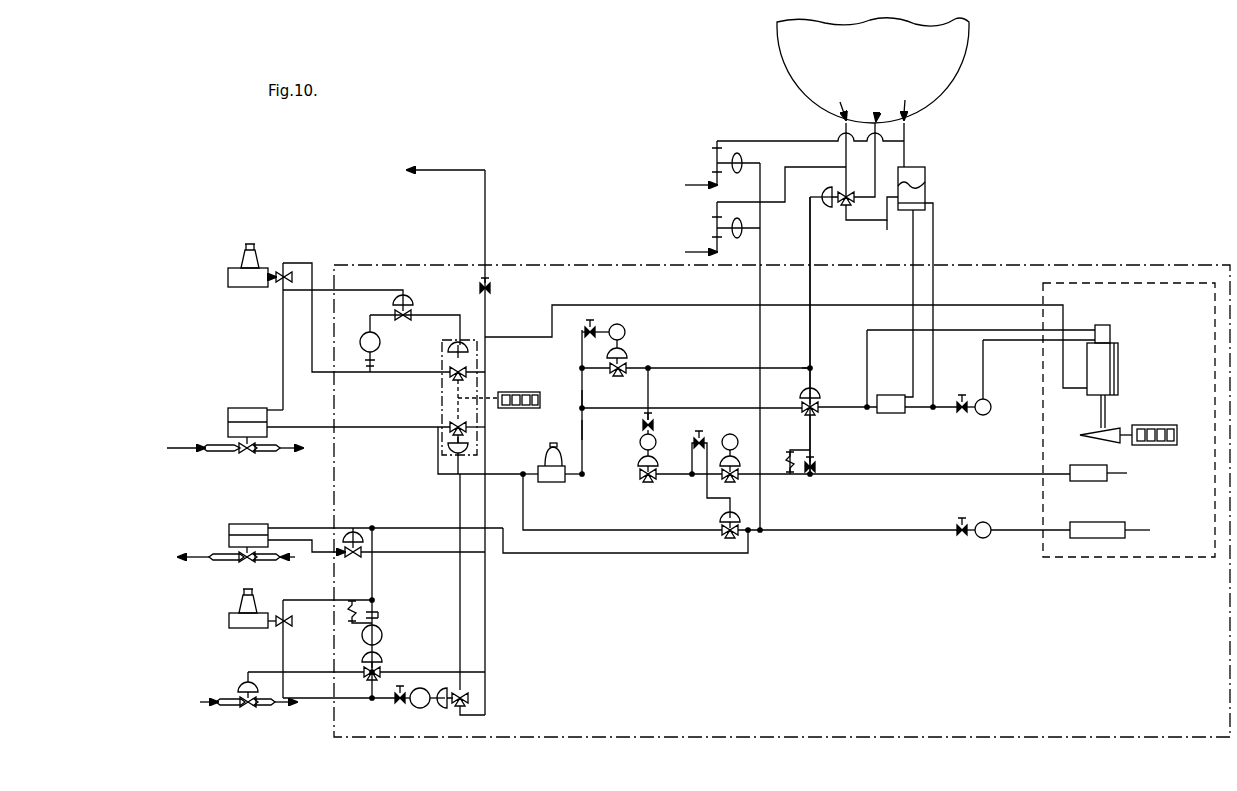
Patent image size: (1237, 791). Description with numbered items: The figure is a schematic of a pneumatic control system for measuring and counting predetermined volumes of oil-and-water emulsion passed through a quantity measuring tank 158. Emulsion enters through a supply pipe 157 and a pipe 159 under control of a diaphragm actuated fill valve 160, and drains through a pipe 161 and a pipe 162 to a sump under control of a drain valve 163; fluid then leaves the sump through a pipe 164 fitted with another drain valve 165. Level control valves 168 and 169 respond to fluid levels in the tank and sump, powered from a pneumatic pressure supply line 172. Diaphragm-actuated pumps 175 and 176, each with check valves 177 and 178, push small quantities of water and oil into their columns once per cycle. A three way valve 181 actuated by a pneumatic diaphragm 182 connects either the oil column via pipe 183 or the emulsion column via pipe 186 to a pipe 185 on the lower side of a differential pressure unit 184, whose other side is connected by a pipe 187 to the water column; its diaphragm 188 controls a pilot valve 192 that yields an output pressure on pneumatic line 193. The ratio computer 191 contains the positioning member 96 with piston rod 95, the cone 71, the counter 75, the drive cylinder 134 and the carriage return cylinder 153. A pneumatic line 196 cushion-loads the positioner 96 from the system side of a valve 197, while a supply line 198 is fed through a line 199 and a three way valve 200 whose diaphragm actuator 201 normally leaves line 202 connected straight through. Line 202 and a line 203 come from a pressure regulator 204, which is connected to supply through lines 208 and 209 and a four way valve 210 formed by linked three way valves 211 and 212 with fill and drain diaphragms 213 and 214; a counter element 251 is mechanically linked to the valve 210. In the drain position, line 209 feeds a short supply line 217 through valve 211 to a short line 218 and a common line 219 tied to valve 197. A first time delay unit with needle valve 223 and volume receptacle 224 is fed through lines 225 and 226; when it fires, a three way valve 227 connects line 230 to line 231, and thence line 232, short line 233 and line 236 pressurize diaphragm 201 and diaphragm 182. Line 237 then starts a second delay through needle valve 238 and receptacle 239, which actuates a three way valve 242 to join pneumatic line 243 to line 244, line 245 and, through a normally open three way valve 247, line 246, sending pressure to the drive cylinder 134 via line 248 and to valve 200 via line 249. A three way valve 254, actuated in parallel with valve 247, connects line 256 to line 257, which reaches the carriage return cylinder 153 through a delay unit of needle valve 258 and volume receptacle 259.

The quantity measuring tank 158 is at (970, 50).
The diaphragm-actuated pump 175 is at (743, 158).
The check valves 177 is at (712, 150).
The diaphragm-actuated pump 176 is at (738, 240).
The check valves 178 is at (712, 218).
The pneumatic pressure supply line 172 is at (462, 168).
The valve 197 is at (492, 290).
The level control valve 168 is at (228, 277).
The diaphragm actuated fill valve 160 is at (246, 406).
The supply pipe 157 is at (214, 443).
The pipe 159 is at (255, 455).
The diaphragm actuated drain valve 163 is at (246, 522).
The pipe 162 is at (228, 562).
The pipe 161 is at (258, 562).
The level control valve 169 is at (229, 621).
The diaphragm actuated drain valve 165 is at (246, 682).
The pipe 164 is at (235, 708).
The drain actuating diaphragm 214 is at (462, 348).
The three way valve 212 is at (450, 370).
The four way valve 210 is at (442, 392).
The short supply line 217 is at (450, 426).
The three way valve 211 is at (445, 437).
The fill actuating diaphragm 213 is at (452, 450).
The pneumatic line 209 is at (447, 478).
The common pneumatic line 219 is at (490, 392).
The short pneumatic line 218 is at (478, 425).
The counter element 251 is at (525, 390).
The pneumatic line 208 is at (533, 470).
The pressure regulator 204 is at (548, 484).
The needle valve 223 is at (594, 326).
The volume receptacle 224 is at (626, 330).
The line 230 is at (606, 352).
The three way diaphragm actuated valve 227 is at (626, 364).
The line 231 is at (668, 367).
The line 232 is at (718, 366).
The line 237 is at (650, 390).
The line 202 is at (710, 406).
The pneumatic line 225 is at (585, 398).
The line 203 is at (585, 428).
The needle valve 238 is at (653, 424).
The three way valve 247 is at (746, 460).
The volume receptacle 239 is at (640, 442).
The pneumatic line 243 is at (614, 475).
The three way valve 242 is at (645, 483).
The line 244 is at (672, 480).
The line 245 is at (700, 480).
The pneumatic line 256 is at (594, 532).
The three way valve 254 is at (722, 536).
The line 236 is at (812, 290).
The pneumatic line 196 is at (722, 303).
The pneumatic supply line 198 is at (1005, 330).
The short line 233 is at (814, 362).
The three way valve 200 is at (818, 404).
The diaphragm actuator 201 is at (798, 394).
The pneumatic line 199 is at (830, 412).
The pilot valve 192 is at (890, 414).
The pneumatic line 193 is at (948, 414).
The line 249 is at (814, 446).
The pneumatic line 248 is at (950, 474).
The line 246 is at (786, 480).
The pneumatic line 257 is at (846, 530).
The needle valve 258 is at (968, 517).
The volume receptacle 259 is at (980, 538).
The positioning member 96 is at (1118, 365).
The piston rod 95 is at (1106, 415).
The cone 71 is at (1095, 440).
The counter 75 is at (1150, 447).
The drive cylinder 134 is at (1082, 481).
The carriage return cylinder 153 is at (1105, 522).
The ratio computer 191 is at (1158, 558).
The pneumatic diaphragm 182 is at (828, 190).
The three way valve 181 is at (843, 208).
The pipe 183 is at (846, 180).
The pipe 186 is at (876, 180).
The pipe 187 is at (906, 150).
The diaphragm 188 is at (915, 182).
The differential pressure unit 184 is at (926, 192).
The pipe 185 is at (867, 228).
The line 226 is at (575, 362).